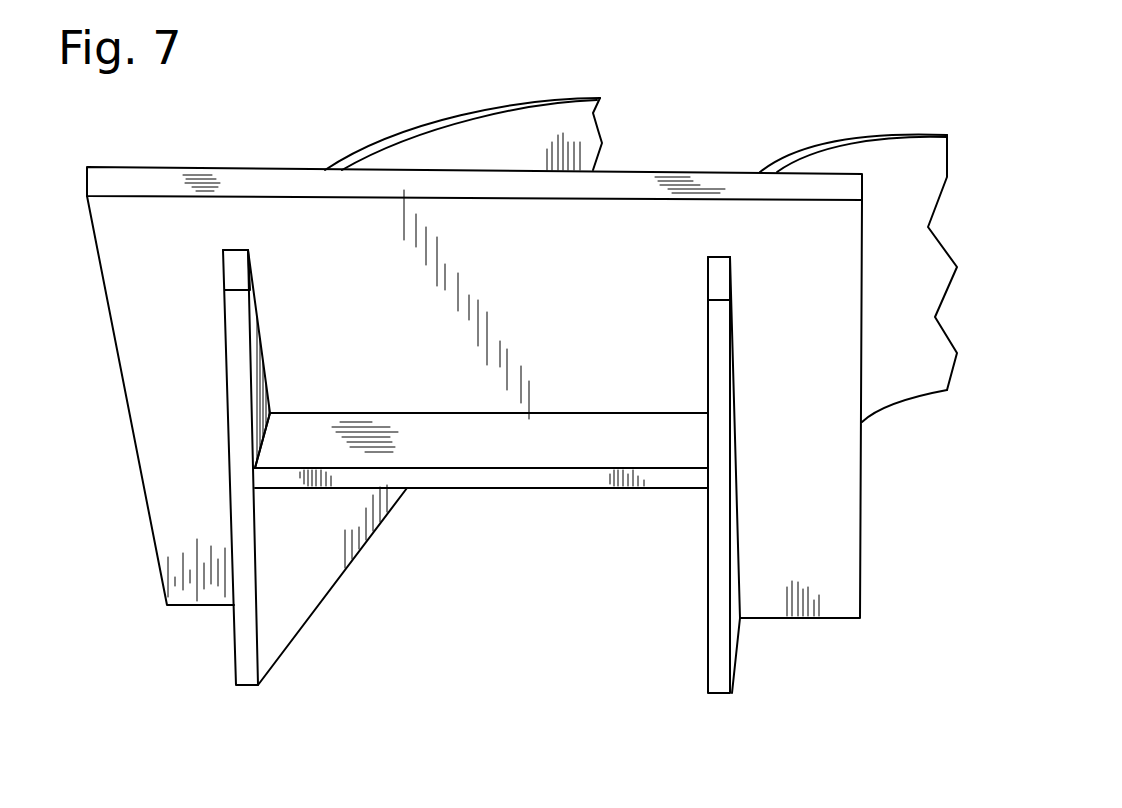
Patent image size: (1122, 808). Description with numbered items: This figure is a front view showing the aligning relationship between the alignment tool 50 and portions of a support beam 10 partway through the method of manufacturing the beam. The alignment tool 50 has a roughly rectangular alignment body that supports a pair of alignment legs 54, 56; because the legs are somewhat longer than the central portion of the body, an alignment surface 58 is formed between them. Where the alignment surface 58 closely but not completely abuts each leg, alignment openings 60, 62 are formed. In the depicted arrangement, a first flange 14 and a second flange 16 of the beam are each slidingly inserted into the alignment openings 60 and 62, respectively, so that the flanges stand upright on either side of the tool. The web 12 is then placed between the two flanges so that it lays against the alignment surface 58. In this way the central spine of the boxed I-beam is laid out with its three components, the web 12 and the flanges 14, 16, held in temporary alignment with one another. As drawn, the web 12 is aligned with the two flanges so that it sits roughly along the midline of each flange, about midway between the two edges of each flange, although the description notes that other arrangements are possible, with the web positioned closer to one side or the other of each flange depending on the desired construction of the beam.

The support beam 10 is at (243, 761).
The web 12 is at (505, 489).
The first flange 14 is at (707, 617).
The second flange 16 is at (290, 622).
The alignment tool 50 is at (247, 117).
The alignment leg 54 is at (830, 463).
The alignment leg 56 is at (152, 363).
The alignment surface 58 is at (415, 413).
The alignment opening 60 is at (730, 260).
The alignment opening 62 is at (241, 256).